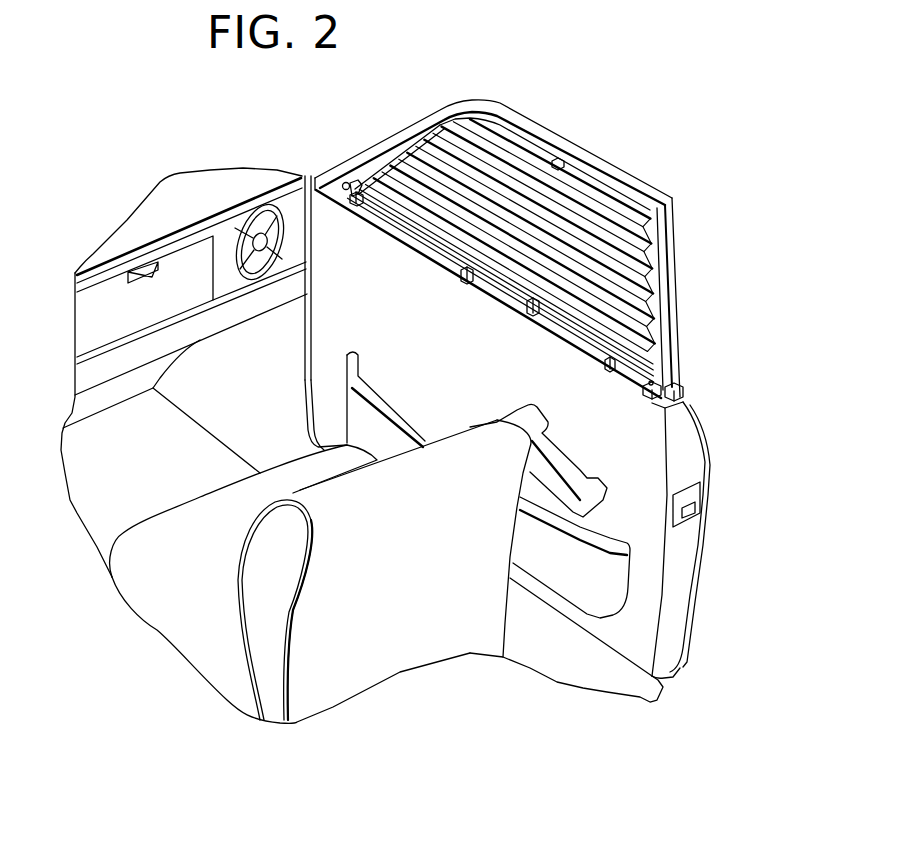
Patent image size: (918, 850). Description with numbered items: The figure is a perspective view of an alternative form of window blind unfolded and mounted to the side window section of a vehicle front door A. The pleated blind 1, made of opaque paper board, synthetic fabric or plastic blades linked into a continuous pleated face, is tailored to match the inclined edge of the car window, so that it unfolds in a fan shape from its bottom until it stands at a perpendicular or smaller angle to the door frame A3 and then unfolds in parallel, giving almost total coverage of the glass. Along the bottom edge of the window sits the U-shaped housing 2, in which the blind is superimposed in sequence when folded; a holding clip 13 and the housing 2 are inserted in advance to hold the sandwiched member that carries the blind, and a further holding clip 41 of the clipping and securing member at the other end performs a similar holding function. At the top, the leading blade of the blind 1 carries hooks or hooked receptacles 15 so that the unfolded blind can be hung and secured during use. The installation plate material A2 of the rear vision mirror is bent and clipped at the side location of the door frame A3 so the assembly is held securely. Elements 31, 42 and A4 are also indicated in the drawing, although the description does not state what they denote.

The pleated blind 1 is at (418, 147).
The housing 2 is at (530, 318).
The holding clip 13 is at (466, 284).
The hooks or hooked receptacles 15 is at (559, 162).
The engaging member 31 is at (356, 204).
The holding clip 41 is at (647, 399).
The lock receiver 42 is at (681, 391).
The front door A is at (690, 557).
The installation plate material of a rear vision mirror A2 is at (352, 176).
The door frame A3 is at (499, 104).
The window frame lower edge A4 is at (607, 367).